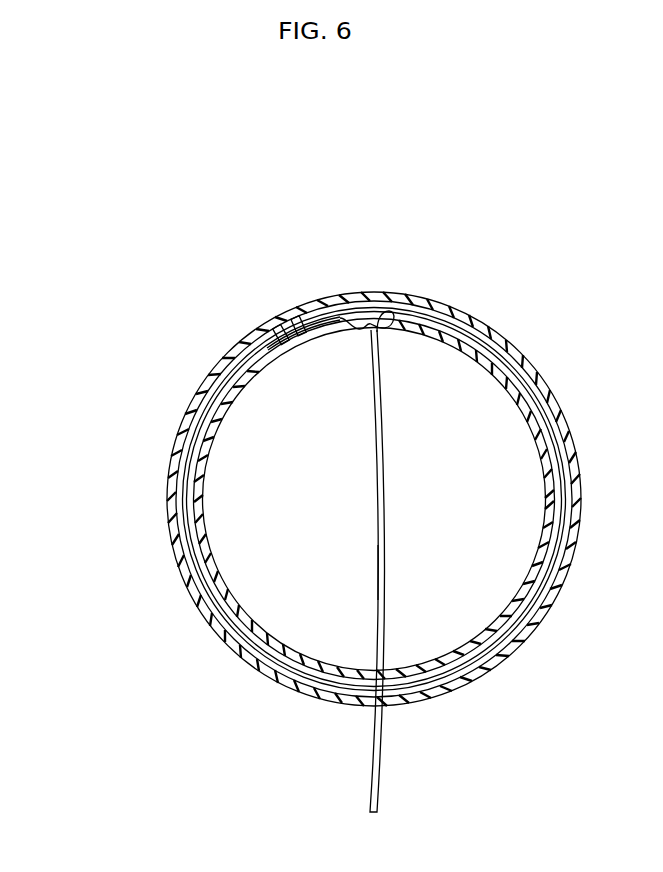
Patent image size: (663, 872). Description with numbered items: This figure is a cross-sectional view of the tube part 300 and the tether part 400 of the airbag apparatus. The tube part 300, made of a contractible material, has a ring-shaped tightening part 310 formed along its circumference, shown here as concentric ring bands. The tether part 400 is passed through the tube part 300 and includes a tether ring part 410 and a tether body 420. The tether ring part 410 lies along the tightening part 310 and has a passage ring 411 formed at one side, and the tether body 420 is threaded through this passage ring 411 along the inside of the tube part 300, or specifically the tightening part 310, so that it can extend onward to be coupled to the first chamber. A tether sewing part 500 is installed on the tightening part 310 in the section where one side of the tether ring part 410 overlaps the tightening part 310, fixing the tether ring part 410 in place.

The tube part 300 is at (448, 288).
The tightening part 310 is at (208, 542).
The tether part 400 is at (346, 773).
The tether ring part 410 is at (317, 305).
The passage ring 411 is at (378, 308).
The tether body 420 is at (385, 570).
The tether sewing part 500 is at (303, 305).